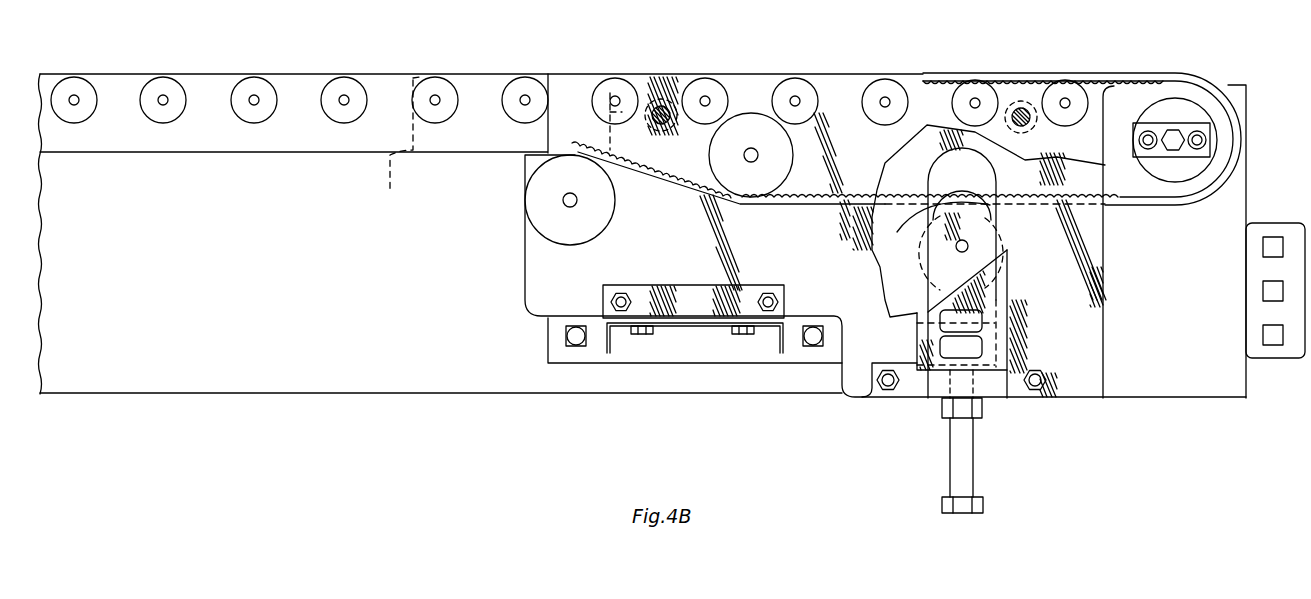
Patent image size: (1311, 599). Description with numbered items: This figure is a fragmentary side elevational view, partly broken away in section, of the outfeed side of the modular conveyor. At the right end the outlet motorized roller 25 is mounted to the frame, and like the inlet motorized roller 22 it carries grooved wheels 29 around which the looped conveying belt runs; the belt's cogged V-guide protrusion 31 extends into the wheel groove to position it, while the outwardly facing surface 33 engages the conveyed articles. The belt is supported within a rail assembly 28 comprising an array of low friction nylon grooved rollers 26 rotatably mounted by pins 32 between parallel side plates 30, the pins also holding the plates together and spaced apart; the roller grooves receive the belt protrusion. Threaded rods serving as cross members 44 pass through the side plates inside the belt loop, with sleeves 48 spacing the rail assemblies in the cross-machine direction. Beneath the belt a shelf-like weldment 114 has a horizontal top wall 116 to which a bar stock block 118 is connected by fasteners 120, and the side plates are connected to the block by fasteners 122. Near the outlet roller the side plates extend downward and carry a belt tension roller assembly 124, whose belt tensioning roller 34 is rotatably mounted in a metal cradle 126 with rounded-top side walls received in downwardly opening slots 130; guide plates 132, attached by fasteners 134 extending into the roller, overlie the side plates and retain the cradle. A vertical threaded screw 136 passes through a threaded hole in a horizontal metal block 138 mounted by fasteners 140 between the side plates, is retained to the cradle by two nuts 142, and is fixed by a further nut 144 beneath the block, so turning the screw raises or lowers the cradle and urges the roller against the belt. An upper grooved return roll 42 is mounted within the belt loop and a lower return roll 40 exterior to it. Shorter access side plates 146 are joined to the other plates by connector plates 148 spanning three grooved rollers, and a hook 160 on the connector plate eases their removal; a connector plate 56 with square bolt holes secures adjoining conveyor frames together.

The inlet motorized roller 22 is at (1235, 85).
The outlet motorized roller 25 is at (1127, 98).
The grooved roller 26 is at (817, 97).
The rail assembly 28 is at (525, 262).
The grooved wheel 29 is at (1207, 92).
The side plate 30 is at (284, 152).
The cogged V-guide protrusion 31 is at (865, 190).
The pin 32 is at (435, 100).
The outwardly facing surface 33 is at (1160, 72).
The belt tensioning roller 34 is at (941, 240).
The lower return roll 40 is at (613, 218).
The upper grooved return roll 42 is at (709, 157).
The cross member 44 is at (663, 106).
The sleeve 48 is at (1033, 130).
The connector plate 56 is at (1283, 223).
The shelf-like weldment 114 is at (702, 323).
The horizontal top wall 116 is at (688, 315).
The bar stock block 118 is at (730, 285).
The fastener 120 is at (642, 334).
The fastener 122 is at (611, 300).
The belt tension roller assembly 124 is at (950, 475).
The metal cradle 126 is at (928, 287).
The downwardly opening slot 130 is at (937, 163).
The guide plate 132 is at (1010, 303).
The fastener 134 is at (968, 246).
The threaded screw 136 is at (973, 460).
The horizontal metal block 138 is at (1006, 398).
The fastener 140 is at (1042, 372).
The nut 142 is at (915, 330).
The nut 144 is at (942, 407).
The access side plate 146 is at (204, 74).
The connector plate 148 is at (495, 141).
The hook 160 is at (633, 80).